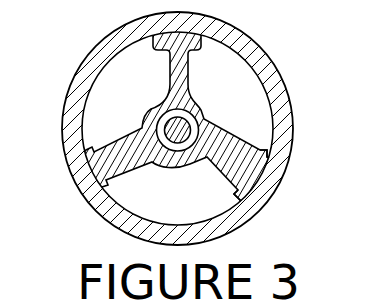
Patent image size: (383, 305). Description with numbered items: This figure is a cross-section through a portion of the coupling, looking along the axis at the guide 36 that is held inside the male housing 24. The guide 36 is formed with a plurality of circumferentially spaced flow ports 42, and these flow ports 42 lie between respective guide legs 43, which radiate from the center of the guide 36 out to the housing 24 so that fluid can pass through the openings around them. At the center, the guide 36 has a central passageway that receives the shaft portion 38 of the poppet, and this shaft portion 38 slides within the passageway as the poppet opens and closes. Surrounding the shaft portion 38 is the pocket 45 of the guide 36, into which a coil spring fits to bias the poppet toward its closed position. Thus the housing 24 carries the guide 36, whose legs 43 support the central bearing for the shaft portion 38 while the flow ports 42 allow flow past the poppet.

The male housing 24 is at (97, 202).
The guide 36 is at (209, 115).
The shaft portion 38 is at (176, 128).
The flow ports 42 is at (195, 210).
The guide legs 43 is at (228, 153).
The pocket 45 is at (167, 117).